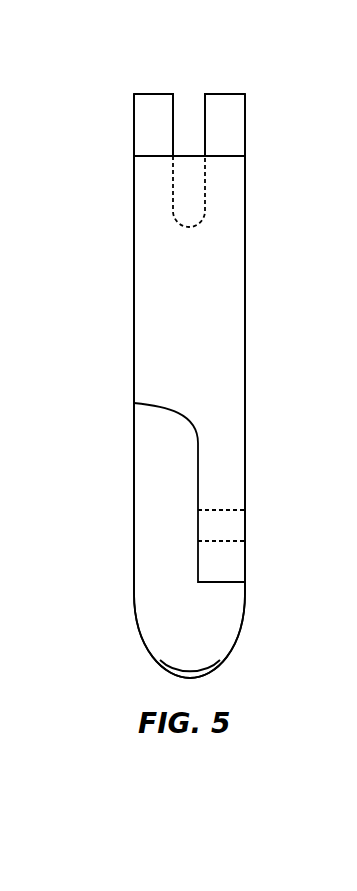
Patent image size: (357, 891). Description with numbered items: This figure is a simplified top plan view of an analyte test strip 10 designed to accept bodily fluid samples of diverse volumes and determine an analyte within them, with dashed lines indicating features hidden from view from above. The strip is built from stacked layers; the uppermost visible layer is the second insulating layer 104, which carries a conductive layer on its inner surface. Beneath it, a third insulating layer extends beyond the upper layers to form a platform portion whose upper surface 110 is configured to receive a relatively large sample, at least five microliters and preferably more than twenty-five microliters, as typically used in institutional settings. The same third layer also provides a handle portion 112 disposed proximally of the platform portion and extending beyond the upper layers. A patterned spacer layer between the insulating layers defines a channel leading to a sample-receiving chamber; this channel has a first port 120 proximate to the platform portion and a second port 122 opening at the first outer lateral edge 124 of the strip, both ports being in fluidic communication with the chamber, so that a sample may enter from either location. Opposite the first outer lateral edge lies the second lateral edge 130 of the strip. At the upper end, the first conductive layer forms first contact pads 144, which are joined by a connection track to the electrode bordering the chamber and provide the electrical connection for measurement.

The drug delivery device / applicator 10 is at (256, 71).
The second insulating layer 104 is at (212, 247).
The upper surface 110 is at (162, 530).
The handle portion 112 is at (200, 636).
The first port 120 is at (198, 525).
The second port 122 is at (245, 525).
The first outer lateral edge 124 is at (250, 472).
The second lateral edge 130 is at (131, 271).
The first contact pads 144 is at (148, 128).